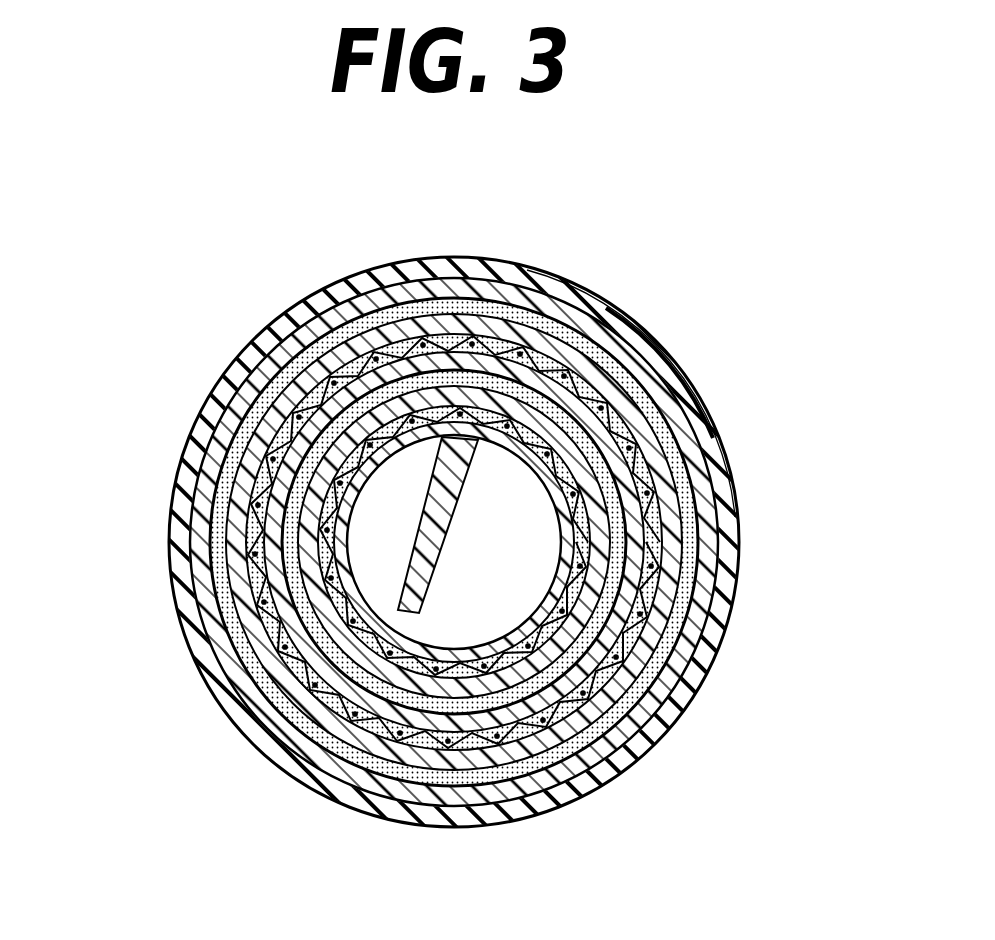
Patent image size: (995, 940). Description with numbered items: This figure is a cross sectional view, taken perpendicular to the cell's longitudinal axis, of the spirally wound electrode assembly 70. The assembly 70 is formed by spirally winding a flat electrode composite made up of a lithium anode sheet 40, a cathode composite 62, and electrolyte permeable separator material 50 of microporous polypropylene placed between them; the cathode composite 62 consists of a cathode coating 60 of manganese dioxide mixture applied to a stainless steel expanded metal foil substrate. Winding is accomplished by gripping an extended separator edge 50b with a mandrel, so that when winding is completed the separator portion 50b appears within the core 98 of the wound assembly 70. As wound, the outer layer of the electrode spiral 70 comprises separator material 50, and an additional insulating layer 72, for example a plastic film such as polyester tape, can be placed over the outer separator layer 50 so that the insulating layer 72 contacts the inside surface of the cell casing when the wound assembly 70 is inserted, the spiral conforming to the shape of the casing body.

The anode sheet 40 is at (680, 478).
The separator material 50 is at (683, 426).
The extended separator edge 50b is at (400, 596).
The cathode coating 60 is at (655, 571).
The cathode composite sheet 62 is at (637, 641).
The spirally wound electrode assembly 70 is at (580, 284).
The insulating layer 72 is at (663, 348).
The core 98 is at (408, 522).